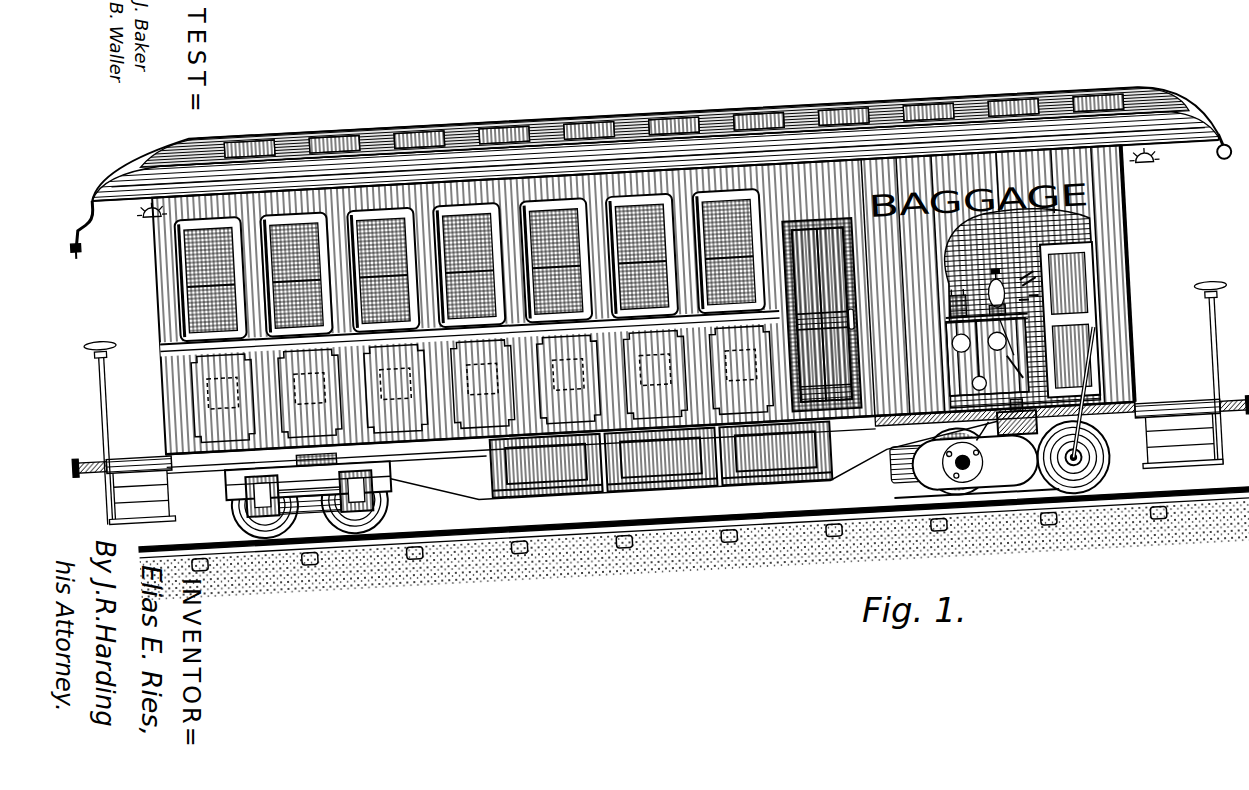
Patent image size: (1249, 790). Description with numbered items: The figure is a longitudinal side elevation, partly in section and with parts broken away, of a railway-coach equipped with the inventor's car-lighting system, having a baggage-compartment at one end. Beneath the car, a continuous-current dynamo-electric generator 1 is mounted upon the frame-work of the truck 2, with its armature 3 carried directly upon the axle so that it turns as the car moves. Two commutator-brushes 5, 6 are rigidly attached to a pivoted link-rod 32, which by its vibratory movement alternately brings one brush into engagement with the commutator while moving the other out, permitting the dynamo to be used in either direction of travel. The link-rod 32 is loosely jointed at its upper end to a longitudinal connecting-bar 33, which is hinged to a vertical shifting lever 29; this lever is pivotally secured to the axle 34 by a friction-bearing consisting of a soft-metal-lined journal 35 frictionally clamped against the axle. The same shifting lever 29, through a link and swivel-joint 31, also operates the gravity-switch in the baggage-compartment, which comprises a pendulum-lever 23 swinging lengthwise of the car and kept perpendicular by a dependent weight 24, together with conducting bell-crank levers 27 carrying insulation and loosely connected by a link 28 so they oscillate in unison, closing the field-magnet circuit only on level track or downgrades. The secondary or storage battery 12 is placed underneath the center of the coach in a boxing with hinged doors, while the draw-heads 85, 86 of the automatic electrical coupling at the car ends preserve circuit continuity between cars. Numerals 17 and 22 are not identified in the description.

The continuous-current dynamo-electric generator 1 is at (981, 461).
The truck 2 is at (977, 488).
The armature 3 is at (984, 425).
The commutator-brush 5 is at (968, 459).
The commutator-brush 6 is at (950, 449).
The secondary or storage battery 12 is at (583, 468).
The regulator 17 is at (1027, 285).
The storage battery cell 22 is at (959, 321).
The pendulum-lever 23 is at (971, 356).
The dependent weight 24 is at (987, 359).
The bell-crank lever 27 is at (1002, 309).
The link 28 is at (1009, 349).
The vertical shifting lever 29 is at (1082, 436).
The swivel-joint 31 is at (940, 462).
The pivoted link-rod 32 is at (975, 462).
The longitudinal connecting-bar 33 is at (1040, 434).
The axle 34 is at (1060, 486).
The journal 35 is at (1084, 450).
The draw-head 85 is at (84, 230).
The draw-head 86 is at (1206, 163).